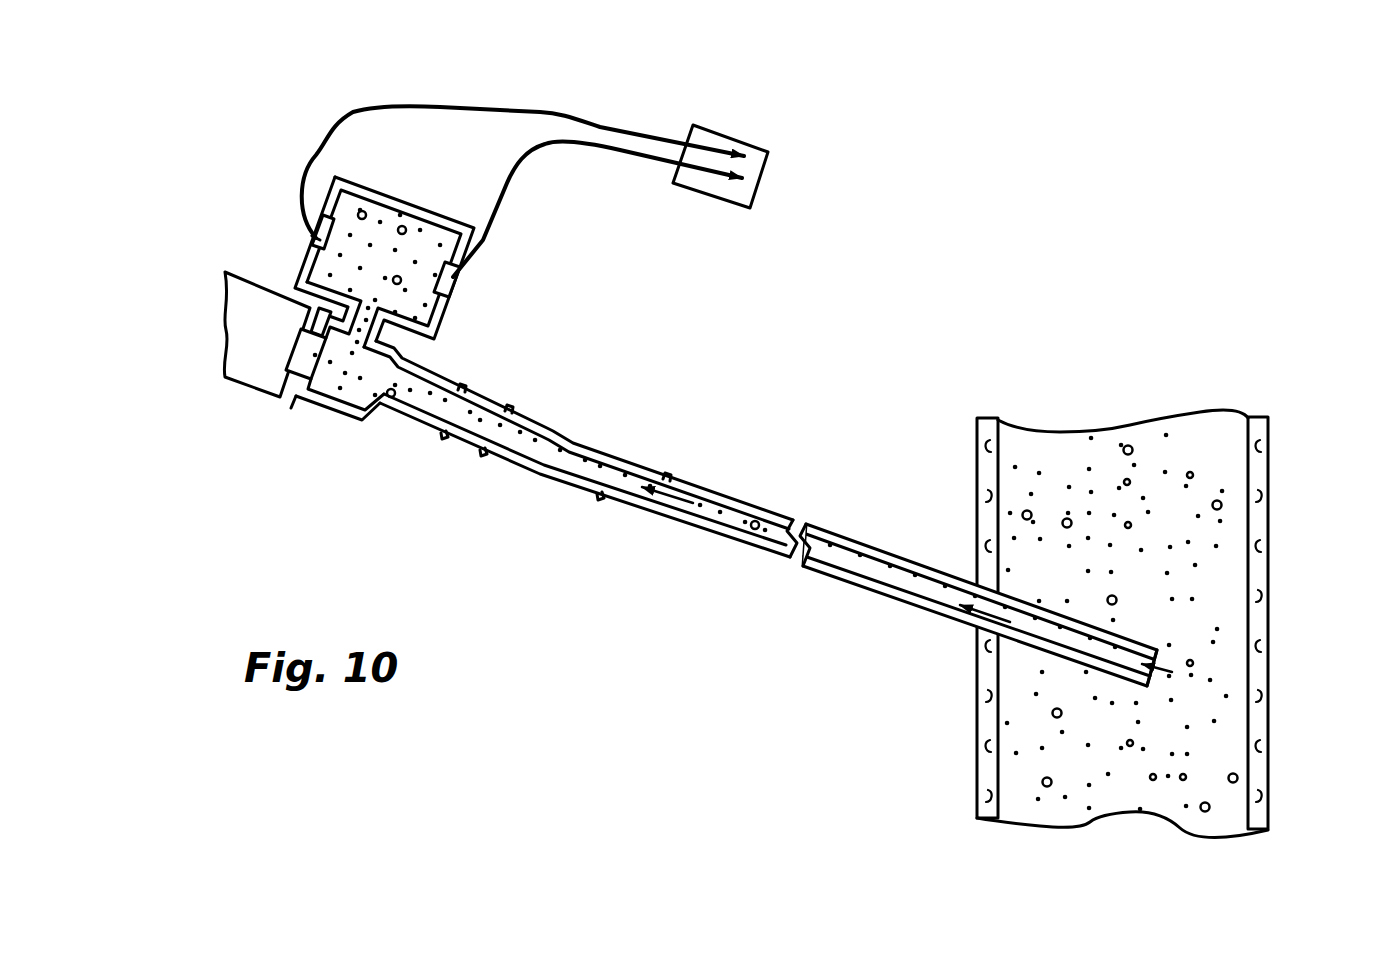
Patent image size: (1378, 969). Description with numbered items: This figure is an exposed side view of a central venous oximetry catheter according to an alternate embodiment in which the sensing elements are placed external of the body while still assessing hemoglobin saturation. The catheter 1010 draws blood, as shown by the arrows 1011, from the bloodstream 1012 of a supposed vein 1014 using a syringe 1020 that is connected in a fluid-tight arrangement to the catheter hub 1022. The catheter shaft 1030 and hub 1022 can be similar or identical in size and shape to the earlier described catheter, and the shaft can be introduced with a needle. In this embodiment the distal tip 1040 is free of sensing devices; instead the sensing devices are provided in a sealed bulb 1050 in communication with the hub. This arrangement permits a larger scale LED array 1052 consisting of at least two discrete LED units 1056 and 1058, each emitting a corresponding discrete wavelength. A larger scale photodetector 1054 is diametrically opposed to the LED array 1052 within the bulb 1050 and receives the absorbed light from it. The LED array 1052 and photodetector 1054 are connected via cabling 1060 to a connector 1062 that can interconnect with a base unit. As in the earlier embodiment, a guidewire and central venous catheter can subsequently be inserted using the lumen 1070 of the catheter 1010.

The catheter 1010 is at (704, 478).
The arrows 1011 is at (663, 497).
The bloodstream 1012 is at (1098, 460).
The vein 1014 is at (984, 410).
The syringe 1020 is at (250, 384).
The catheter hub 1022 is at (362, 423).
The catheter shaft 1030 is at (857, 582).
The distal tip 1040 is at (1165, 656).
The bulb 1050 is at (440, 330).
The LED array 1052 is at (306, 236).
The photodetector 1054 is at (464, 257).
The LED unit 1056 is at (333, 213).
The LED unit 1058 is at (318, 244).
The cabling 1060 is at (557, 140).
The connector 1062 is at (730, 130).
The lumen 1070 is at (1155, 671).